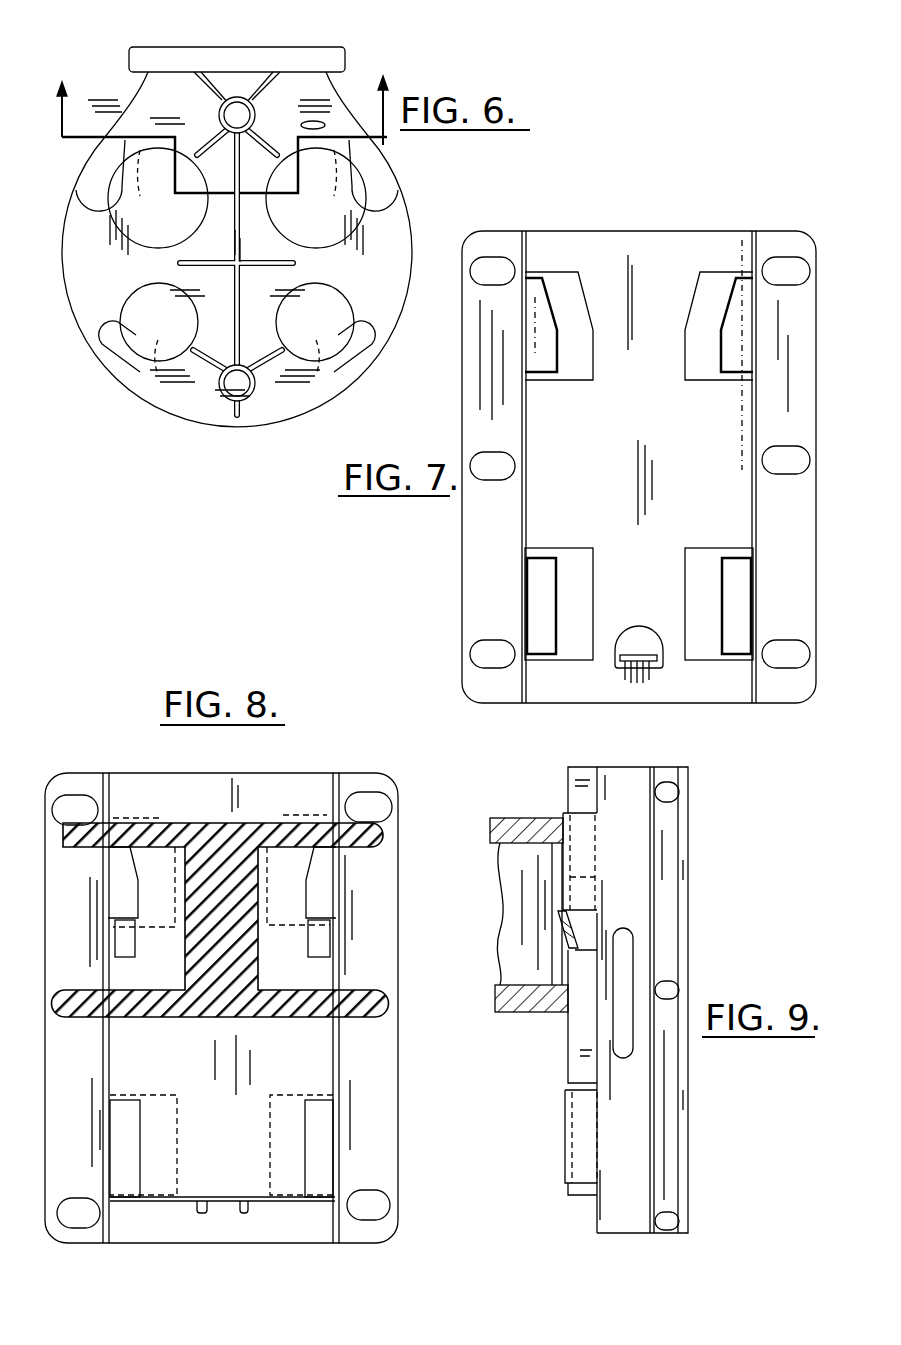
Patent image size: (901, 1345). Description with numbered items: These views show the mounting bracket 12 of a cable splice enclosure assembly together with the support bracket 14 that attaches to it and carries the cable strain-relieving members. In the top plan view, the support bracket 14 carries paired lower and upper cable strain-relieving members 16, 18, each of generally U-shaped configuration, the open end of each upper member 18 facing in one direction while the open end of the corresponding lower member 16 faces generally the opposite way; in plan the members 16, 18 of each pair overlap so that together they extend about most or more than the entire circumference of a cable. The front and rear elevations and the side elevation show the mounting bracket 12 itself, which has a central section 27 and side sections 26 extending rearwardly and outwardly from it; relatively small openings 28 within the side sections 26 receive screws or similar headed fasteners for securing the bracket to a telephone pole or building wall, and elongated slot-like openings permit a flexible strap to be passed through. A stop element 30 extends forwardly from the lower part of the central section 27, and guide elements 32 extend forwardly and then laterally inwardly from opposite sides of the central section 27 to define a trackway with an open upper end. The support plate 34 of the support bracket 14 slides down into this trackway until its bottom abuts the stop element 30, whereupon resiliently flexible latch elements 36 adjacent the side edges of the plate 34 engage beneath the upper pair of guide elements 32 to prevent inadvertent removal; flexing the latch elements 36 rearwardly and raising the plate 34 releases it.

In FIG. 7, the mounting bracket 12 is at (618, 229).
In FIG. 8, the mounting bracket 12 is at (225, 1244).
In FIG. 9, the mounting bracket 12 is at (623, 1233).
In FIG. 6, the support bracket 14 is at (373, 70).
In FIG. 8, the support bracket 14 is at (130, 967).
In FIG. 9, the support bracket 14 is at (513, 817).
In FIG. 6, the lower cable strain-relieving member 16 is at (137, 247).
In FIG. 6, the upper cable strain-relieving member 18 is at (87, 193).
In FIG. 7, the side sections 26 is at (800, 398).
In FIG. 8, the side sections 26 is at (385, 1095).
In FIG. 9, the side sections 26 is at (680, 868).
In FIG. 7, the central section 27 is at (592, 472).
In FIG. 7, the openings 28 is at (500, 263).
In FIG. 8, the openings 28 is at (75, 797).
In FIG. 9, the openings 28 is at (680, 1222).
In FIG. 7, the stop element 30 is at (650, 672).
In FIG. 7, the guide elements 32 is at (737, 293).
In FIG. 8, the guide elements 32 is at (300, 1140).
In FIG. 6, the support plate 34 is at (262, 53).
In FIG. 8, the support plate 34 is at (202, 787).
In FIG. 9, the support plate 34 is at (575, 1050).
In FIG. 9, the latch elements 36 is at (560, 930).